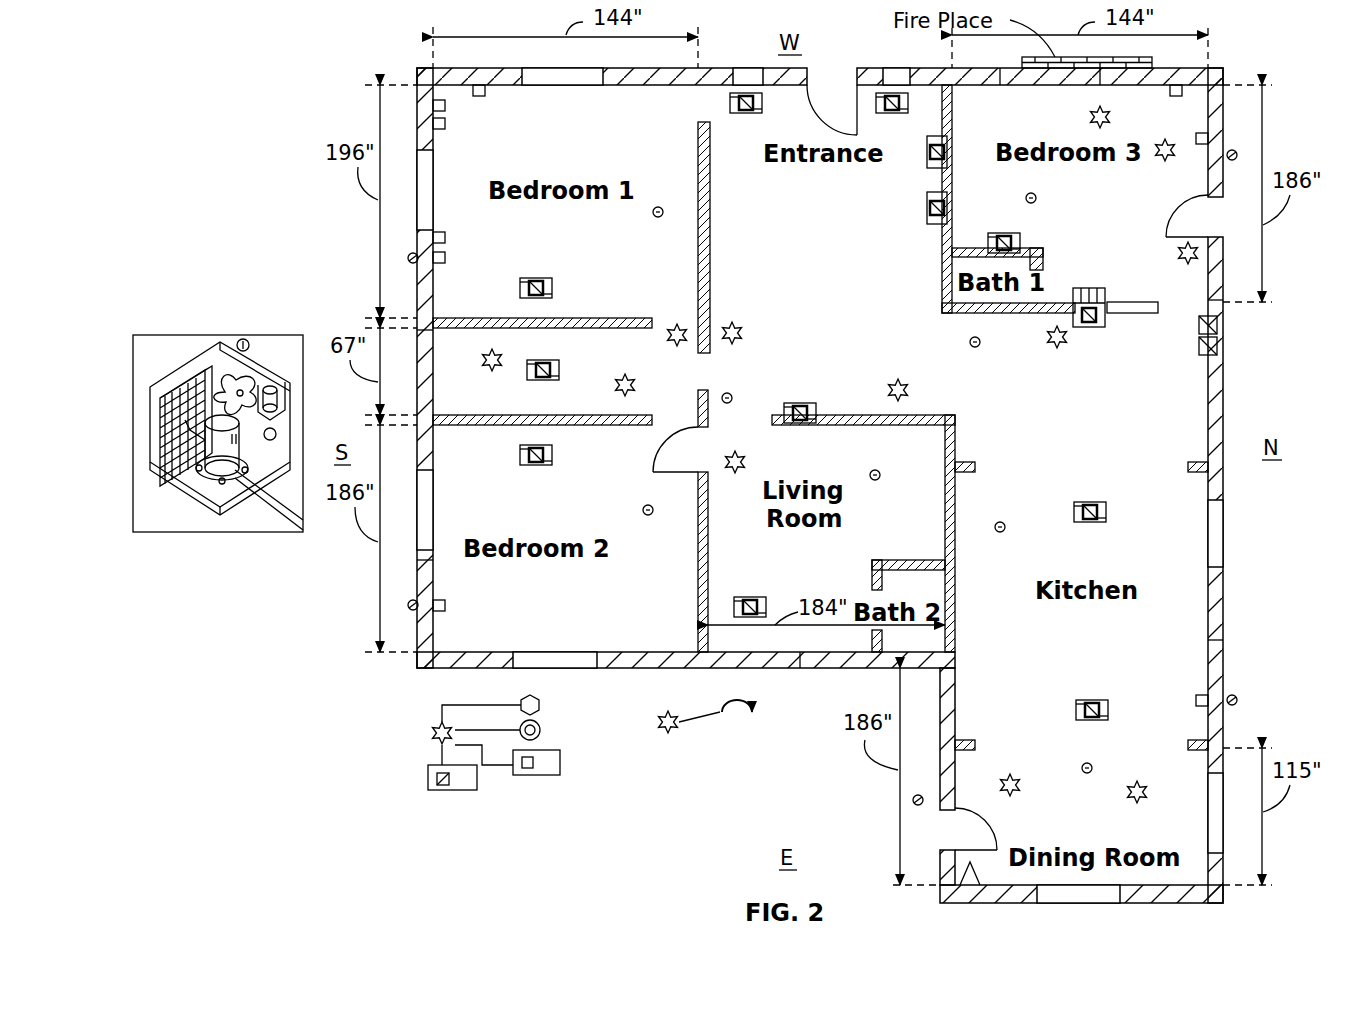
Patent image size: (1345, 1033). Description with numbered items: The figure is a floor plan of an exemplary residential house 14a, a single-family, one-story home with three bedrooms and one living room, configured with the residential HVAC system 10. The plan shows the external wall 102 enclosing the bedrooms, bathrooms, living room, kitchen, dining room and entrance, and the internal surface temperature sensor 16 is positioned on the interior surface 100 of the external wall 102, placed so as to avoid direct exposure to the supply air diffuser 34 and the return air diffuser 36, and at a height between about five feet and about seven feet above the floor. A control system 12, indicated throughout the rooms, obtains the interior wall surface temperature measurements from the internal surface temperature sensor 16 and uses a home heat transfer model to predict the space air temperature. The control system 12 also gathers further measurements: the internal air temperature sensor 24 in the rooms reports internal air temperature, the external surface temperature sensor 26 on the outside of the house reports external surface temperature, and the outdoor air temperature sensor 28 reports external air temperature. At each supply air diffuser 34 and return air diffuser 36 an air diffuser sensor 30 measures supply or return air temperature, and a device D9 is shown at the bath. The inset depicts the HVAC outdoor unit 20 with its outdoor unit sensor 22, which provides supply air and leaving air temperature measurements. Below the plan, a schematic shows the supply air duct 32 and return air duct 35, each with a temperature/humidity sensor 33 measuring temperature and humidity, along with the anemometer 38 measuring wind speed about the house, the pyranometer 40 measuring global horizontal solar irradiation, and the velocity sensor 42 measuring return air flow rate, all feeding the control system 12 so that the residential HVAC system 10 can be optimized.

The residential HVAC system 10 is at (165, 52).
The control system 12 is at (672, 325).
The residential house 14a is at (1225, 888).
The internal surface temperature sensor 16 is at (445, 106).
The HVAC outdoor unit 20 is at (180, 370).
The outdoor unit sensor 22 is at (243, 338).
The internal air temperature sensor 24 is at (656, 218).
The external surface temperature sensor 26 is at (410, 260).
The outdoor air temperature sensor 28 is at (914, 802).
The air diffuser sensor 30 is at (552, 292).
The supply air duct 32 is at (562, 765).
The temperature/humidity sensor 33 is at (442, 790).
The supply air diffuser 34 is at (540, 278).
The return air duct 35 is at (428, 775).
The return air diffuser 36 is at (948, 165).
The anemometer 38 is at (760, 707).
The pyranometer 40 is at (542, 702).
The velocity sensor 42 is at (542, 733).
The interior surface 100 is at (632, 84).
The external wall 102 is at (453, 75).
The door sensor D9 is at (1089, 292).